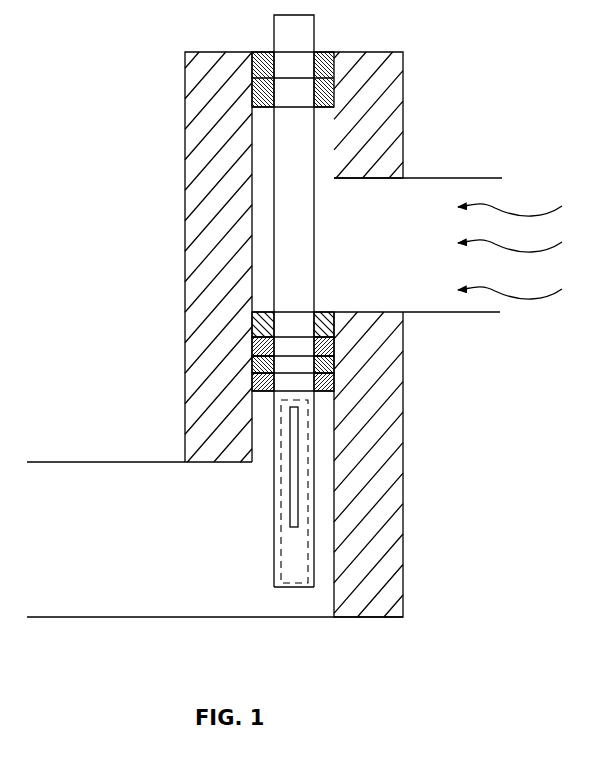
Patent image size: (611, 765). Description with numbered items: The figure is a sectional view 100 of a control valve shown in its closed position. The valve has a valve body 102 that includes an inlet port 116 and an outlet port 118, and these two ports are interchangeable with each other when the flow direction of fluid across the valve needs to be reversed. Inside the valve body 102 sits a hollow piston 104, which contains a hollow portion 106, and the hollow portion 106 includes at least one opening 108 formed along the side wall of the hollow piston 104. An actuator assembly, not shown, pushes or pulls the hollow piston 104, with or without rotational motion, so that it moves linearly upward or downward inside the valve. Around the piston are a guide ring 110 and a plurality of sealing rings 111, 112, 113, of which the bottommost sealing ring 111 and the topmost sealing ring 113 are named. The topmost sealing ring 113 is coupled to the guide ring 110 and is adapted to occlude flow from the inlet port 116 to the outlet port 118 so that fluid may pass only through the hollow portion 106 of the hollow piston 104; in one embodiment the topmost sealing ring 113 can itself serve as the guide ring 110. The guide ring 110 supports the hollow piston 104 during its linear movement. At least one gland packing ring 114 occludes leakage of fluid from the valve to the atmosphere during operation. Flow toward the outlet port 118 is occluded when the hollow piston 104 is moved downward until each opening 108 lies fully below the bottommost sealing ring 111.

The sectional view 100 is at (485, 686).
The valve body 102 is at (185, 243).
The hollow piston 104 is at (274, 25).
The hollow portion 106 is at (280, 571).
The opening 108 is at (290, 503).
The guide ring 110 is at (330, 313).
The bottommost sealing ring 111 is at (334, 389).
The sealing ring 112 is at (334, 367).
The topmost sealing ring 113 is at (334, 348).
The gland packing ring 114 is at (337, 93).
The inlet port 116 is at (482, 197).
The outlet port 118 is at (62, 466).